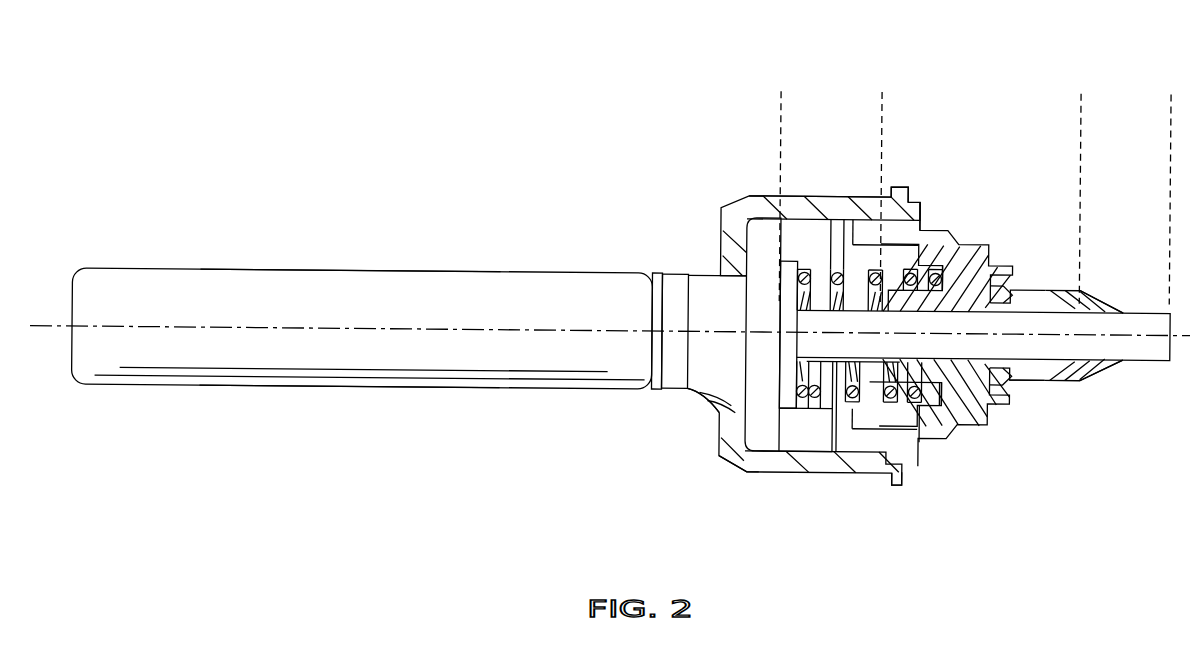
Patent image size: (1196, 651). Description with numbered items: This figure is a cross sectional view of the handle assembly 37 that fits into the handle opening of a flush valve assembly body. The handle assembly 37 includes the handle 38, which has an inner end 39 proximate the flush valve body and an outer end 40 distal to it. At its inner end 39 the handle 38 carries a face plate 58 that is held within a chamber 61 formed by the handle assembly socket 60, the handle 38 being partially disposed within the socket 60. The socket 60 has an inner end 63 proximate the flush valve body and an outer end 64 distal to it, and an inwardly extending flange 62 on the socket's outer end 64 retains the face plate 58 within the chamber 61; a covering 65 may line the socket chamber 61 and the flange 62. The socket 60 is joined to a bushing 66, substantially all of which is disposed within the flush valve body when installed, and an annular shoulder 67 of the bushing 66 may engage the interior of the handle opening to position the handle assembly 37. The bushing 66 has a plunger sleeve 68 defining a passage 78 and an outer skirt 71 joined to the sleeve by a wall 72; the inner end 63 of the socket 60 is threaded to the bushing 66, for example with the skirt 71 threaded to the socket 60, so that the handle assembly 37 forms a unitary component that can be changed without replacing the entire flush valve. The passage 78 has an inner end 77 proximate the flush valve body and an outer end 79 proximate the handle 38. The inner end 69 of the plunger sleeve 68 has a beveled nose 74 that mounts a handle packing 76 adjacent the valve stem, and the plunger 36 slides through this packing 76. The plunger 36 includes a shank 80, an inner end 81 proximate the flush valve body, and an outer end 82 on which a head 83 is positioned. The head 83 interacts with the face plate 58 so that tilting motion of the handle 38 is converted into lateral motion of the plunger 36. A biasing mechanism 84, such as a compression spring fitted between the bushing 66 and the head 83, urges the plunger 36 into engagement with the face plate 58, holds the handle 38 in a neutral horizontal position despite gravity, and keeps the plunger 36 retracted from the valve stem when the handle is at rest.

The plunger 36 is at (981, 347).
The handle assembly 37 is at (346, 459).
The handle 38 is at (346, 311).
The inner end 39 is at (744, 290).
The outer end 40 is at (121, 260).
The face plate 58 is at (760, 430).
The handle assembly socket 60 is at (725, 205).
The chamber 61 is at (795, 232).
The inwardly extending flange 62 is at (755, 242).
The inner end 63 is at (895, 485).
The outer end 64 is at (718, 418).
The covering 65 is at (783, 198).
The bushing 66 is at (980, 241).
The annular shoulder 67 is at (930, 229).
The plunger sleeve 68 is at (1017, 278).
The inner end 69 is at (1068, 296).
The outer skirt 71 is at (875, 423).
The wall 72 is at (845, 440).
The beveled nose 74 is at (1015, 368).
The handle packing 76 is at (1093, 373).
The inner end 77 is at (1062, 302).
The passage 78 is at (940, 305).
The outer end 79 is at (882, 238).
The shank 80 is at (880, 90).
The inner end 81 is at (1079, 90).
The outer end 82 is at (779, 90).
The head 83 is at (797, 300).
The biasing mechanism 84 is at (905, 400).